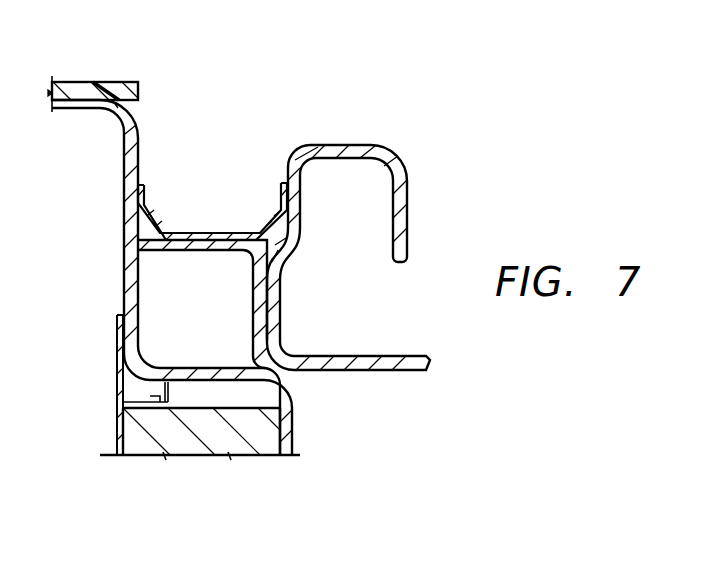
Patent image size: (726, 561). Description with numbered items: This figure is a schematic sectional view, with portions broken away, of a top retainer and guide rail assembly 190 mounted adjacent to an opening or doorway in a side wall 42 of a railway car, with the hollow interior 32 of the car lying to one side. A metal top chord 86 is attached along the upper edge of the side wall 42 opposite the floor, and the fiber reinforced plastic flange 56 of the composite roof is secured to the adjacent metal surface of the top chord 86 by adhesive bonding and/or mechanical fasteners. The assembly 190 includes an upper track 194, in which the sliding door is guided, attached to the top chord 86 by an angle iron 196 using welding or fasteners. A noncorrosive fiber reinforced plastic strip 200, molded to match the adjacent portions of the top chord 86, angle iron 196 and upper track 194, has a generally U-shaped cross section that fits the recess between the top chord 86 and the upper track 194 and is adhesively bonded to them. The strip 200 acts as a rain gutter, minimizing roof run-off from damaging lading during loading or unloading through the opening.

The hollow interior 32 is at (52, 249).
The side wall 42 is at (183, 440).
The fiber reinforced plastic flange 56 is at (82, 80).
The top chord 86 is at (140, 136).
The top retainer and guide rail assembly 190 is at (400, 224).
The upper track 194 is at (353, 148).
The angle iron 196 is at (187, 252).
The fiber reinforced plastic strip 200 is at (156, 224).